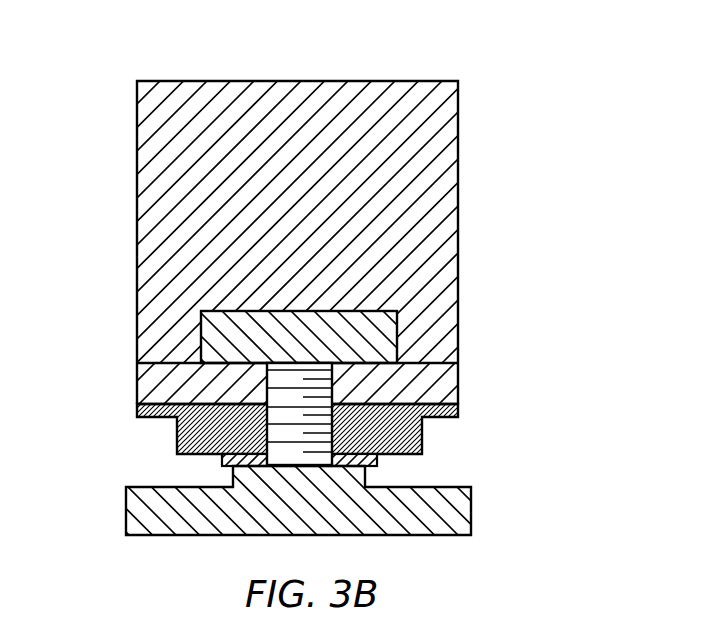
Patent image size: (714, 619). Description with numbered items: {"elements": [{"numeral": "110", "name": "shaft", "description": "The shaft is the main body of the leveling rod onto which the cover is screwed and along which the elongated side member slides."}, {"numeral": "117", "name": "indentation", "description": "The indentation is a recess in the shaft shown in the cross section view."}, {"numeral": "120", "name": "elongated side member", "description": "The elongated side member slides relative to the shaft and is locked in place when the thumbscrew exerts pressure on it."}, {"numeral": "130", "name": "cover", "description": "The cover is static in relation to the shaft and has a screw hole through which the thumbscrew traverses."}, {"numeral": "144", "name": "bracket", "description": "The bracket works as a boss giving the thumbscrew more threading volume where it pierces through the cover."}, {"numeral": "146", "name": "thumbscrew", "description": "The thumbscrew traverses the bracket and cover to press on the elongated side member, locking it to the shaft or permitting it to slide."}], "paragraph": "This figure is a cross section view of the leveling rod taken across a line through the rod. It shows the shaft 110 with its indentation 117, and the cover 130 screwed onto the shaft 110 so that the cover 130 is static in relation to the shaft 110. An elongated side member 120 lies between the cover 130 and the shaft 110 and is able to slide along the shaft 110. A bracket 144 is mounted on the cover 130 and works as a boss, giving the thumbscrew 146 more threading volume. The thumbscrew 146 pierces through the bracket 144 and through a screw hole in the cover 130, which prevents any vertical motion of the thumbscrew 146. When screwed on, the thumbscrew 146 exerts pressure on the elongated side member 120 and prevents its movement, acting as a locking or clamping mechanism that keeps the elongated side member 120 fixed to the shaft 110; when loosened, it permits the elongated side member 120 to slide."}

The magnet block 110 is at (378, 81).
The recess / interface 117 is at (395, 310).
The insert plate 120 is at (358, 344).
The mounting plate 130 is at (185, 385).
The flange 144 is at (403, 428).
The base 146 is at (471, 510).